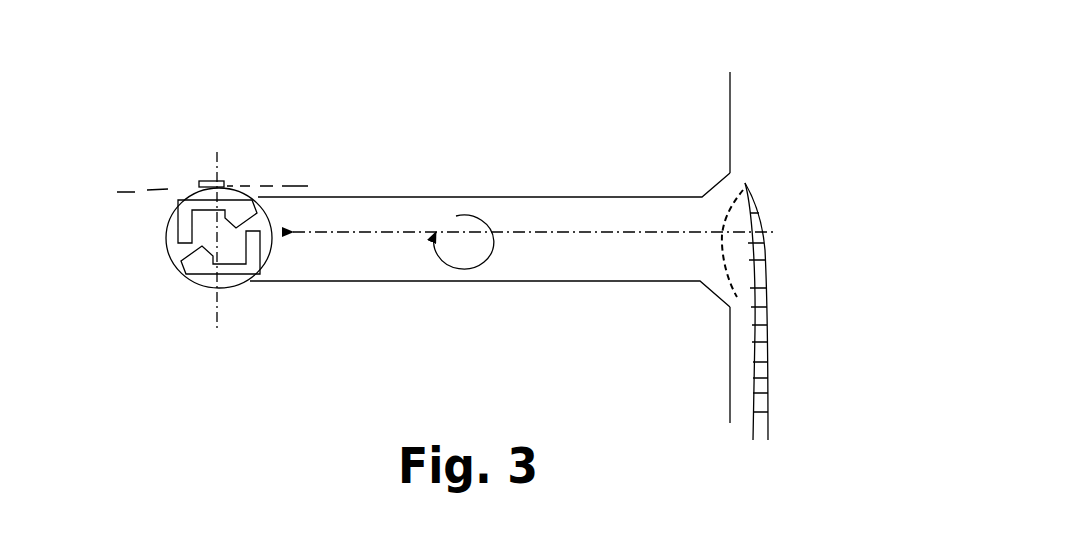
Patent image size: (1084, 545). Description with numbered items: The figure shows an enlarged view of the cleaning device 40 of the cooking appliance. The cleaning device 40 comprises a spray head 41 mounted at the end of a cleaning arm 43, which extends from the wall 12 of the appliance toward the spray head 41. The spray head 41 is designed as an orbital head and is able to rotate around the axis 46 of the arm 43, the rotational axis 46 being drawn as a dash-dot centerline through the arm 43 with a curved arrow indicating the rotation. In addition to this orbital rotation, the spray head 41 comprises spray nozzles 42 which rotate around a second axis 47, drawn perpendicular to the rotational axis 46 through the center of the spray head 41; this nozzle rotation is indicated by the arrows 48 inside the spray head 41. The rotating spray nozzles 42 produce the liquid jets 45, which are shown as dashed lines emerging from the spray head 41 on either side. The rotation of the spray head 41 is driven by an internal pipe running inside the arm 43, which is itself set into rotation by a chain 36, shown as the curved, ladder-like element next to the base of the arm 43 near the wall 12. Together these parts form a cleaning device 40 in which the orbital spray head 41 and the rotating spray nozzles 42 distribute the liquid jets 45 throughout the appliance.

The wall of container 12 is at (731, 105).
The chain 36 is at (767, 317).
The cleaning device 40 is at (472, 123).
The spray head 41 is at (185, 191).
The spray nozzles 42 is at (228, 182).
The cleaning arm 43 is at (550, 197).
The liquid jets 45 is at (127, 190).
The rotational axis 46 is at (376, 235).
The axis 47 is at (222, 312).
The arrows 48 is at (188, 232).